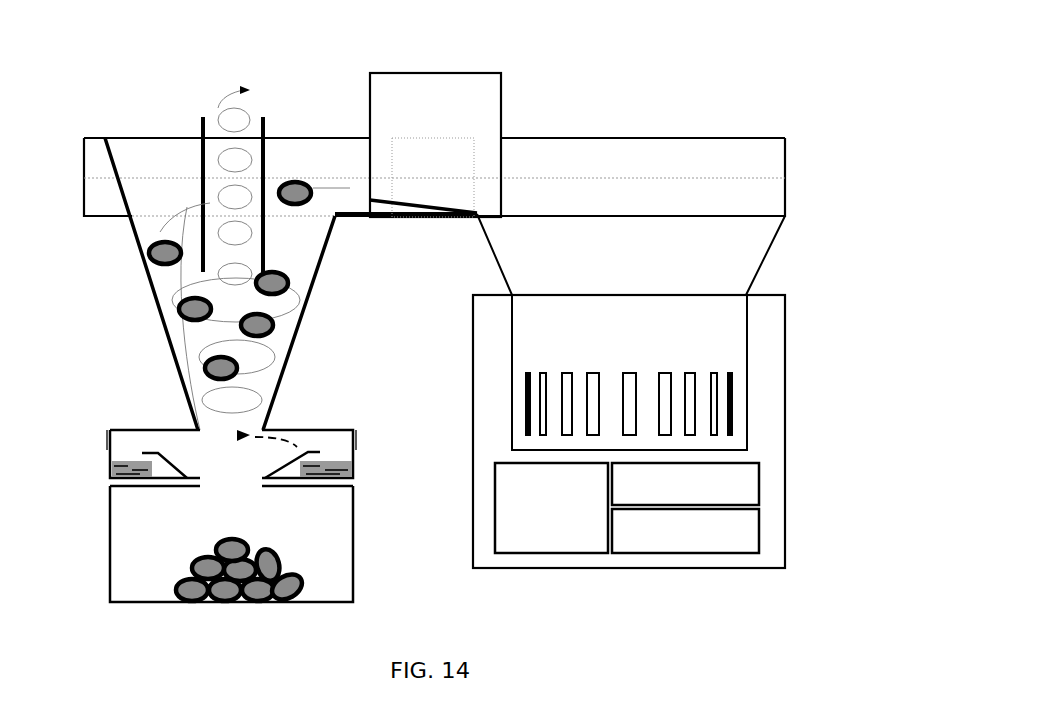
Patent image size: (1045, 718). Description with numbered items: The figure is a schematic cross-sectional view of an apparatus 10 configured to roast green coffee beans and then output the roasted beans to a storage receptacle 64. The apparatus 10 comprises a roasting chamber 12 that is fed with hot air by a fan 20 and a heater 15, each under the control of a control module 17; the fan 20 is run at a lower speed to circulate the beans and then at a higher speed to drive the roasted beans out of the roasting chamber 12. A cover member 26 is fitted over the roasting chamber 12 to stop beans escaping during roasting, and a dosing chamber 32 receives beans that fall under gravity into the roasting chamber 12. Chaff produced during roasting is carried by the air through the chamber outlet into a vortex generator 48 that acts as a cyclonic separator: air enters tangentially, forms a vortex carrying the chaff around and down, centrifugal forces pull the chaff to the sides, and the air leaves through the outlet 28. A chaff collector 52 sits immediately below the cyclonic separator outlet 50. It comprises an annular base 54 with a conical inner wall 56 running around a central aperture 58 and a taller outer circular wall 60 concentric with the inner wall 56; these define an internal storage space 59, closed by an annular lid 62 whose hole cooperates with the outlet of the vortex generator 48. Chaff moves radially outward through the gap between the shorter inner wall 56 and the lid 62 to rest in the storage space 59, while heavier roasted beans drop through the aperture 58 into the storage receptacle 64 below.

The apparatus 10 is at (594, 83).
The roasting chamber 12 is at (667, 250).
The heater 15 is at (759, 522).
The control module 17 is at (495, 508).
The fan 20 is at (759, 485).
The cover member 26 is at (145, 137).
The outlet 28 is at (208, 138).
The dosing chamber 32 is at (370, 113).
The vortex generator 48 is at (287, 338).
The cyclonic separator outlet 50 is at (338, 421).
The chaff collector 52 is at (193, 421).
The annular base 54 is at (138, 472).
The conical inner wall 56 is at (158, 455).
The central aperture 58 is at (240, 483).
The internal storage space 59 is at (332, 454).
The outer circular wall 60 is at (112, 462).
The annular lid 62 is at (150, 430).
The storage receptacle 64 is at (168, 601).